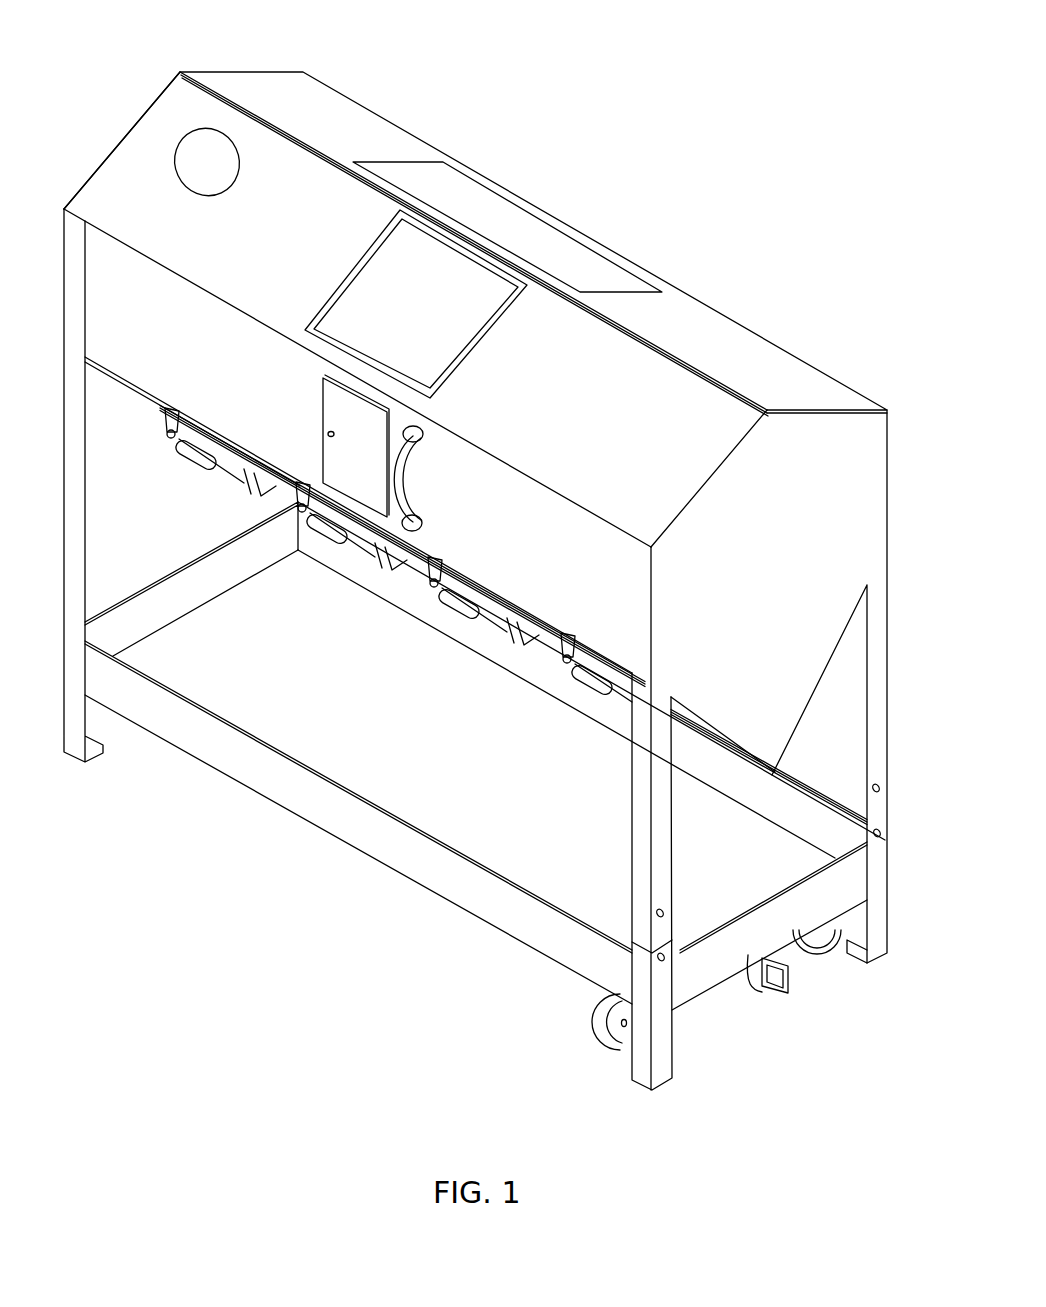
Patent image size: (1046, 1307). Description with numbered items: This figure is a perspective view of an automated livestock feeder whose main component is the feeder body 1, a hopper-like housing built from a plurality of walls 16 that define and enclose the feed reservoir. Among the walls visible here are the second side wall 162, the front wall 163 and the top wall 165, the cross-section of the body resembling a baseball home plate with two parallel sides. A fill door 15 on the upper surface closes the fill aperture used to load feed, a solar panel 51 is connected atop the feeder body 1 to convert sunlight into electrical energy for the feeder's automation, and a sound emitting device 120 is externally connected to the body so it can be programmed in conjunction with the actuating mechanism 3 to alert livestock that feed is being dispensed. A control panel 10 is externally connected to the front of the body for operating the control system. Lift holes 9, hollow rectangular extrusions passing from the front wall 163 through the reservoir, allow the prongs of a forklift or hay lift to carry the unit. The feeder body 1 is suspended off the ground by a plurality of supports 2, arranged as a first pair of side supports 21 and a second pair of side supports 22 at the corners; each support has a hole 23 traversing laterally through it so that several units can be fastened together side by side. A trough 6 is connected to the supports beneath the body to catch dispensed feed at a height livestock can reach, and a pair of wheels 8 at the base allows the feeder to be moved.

The feeder body 1 is at (95, 142).
The plurality of supports 2 is at (73, 492).
The actuating mechanism 3 is at (211, 497).
The trough 6 is at (352, 777).
The pair of wheels 8 is at (601, 1040).
The lift holes 9 is at (262, 462).
The control panel 10 is at (366, 472).
The fill door 15 is at (355, 285).
The plurality of walls 16 is at (401, 112).
The first pair of side supports 21 is at (100, 576).
The second pair of side supports 22 is at (613, 868).
The hole 23 is at (663, 913).
The solar panel 51 is at (577, 243).
The sound emitting device 120 is at (237, 159).
The second side wall 162 is at (778, 579).
The front wall 163 is at (536, 562).
The top wall 165 is at (743, 357).